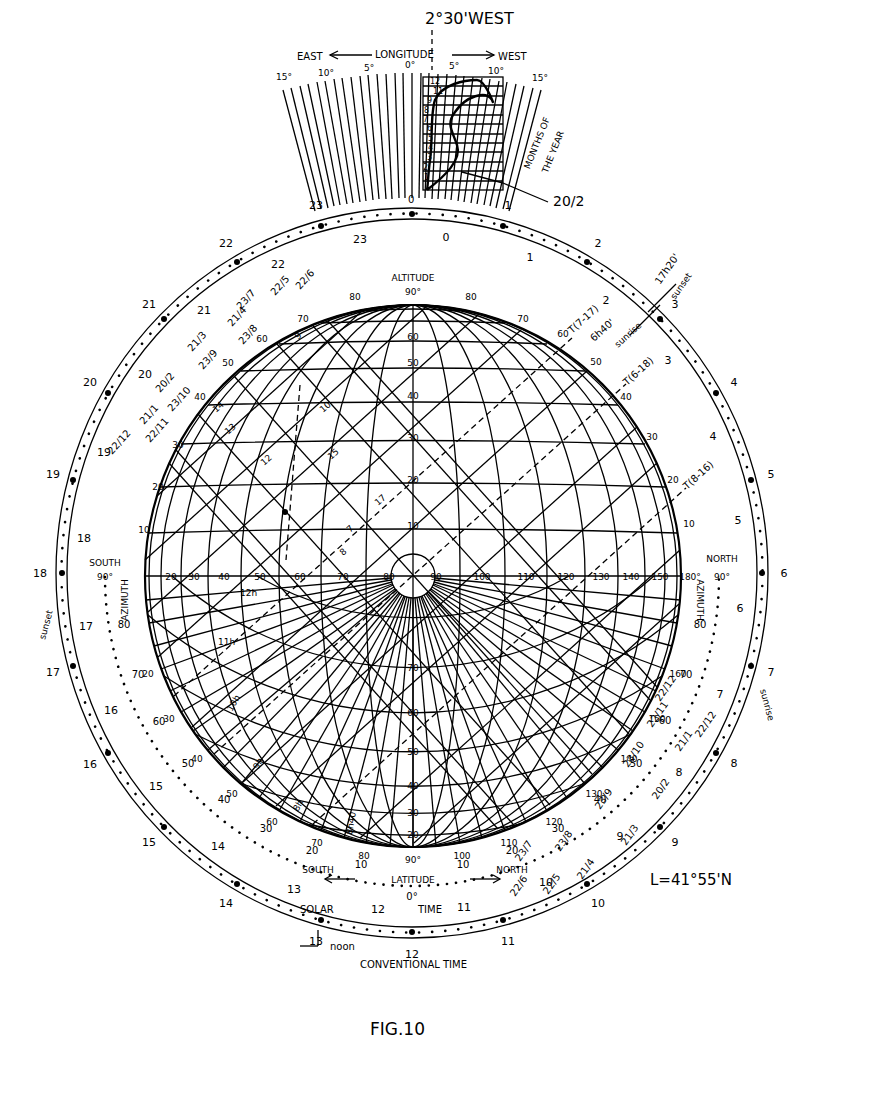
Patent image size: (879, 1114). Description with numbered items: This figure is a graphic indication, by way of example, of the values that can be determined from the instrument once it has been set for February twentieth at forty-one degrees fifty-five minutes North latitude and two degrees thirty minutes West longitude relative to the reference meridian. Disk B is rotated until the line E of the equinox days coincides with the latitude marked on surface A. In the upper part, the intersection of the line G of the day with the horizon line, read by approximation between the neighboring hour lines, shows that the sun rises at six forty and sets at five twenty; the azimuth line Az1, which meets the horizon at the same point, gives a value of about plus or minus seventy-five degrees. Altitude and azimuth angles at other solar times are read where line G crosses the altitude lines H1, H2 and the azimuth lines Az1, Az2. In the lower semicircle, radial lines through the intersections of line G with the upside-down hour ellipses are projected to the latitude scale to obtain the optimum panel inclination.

The line of the day G is at (417, 549).
The line of the equinox days E is at (674, 837).
The altitude line H1 is at (150, 562).
The altitude line H2 is at (148, 512).
The azimuth line Az1 is at (375, 305).
The azimuth line Az2 is at (353, 305).